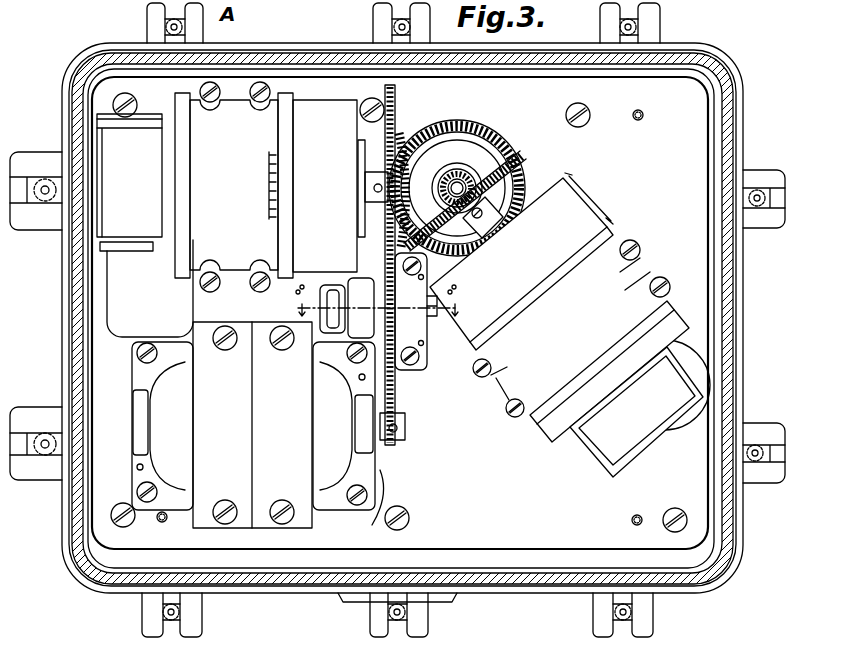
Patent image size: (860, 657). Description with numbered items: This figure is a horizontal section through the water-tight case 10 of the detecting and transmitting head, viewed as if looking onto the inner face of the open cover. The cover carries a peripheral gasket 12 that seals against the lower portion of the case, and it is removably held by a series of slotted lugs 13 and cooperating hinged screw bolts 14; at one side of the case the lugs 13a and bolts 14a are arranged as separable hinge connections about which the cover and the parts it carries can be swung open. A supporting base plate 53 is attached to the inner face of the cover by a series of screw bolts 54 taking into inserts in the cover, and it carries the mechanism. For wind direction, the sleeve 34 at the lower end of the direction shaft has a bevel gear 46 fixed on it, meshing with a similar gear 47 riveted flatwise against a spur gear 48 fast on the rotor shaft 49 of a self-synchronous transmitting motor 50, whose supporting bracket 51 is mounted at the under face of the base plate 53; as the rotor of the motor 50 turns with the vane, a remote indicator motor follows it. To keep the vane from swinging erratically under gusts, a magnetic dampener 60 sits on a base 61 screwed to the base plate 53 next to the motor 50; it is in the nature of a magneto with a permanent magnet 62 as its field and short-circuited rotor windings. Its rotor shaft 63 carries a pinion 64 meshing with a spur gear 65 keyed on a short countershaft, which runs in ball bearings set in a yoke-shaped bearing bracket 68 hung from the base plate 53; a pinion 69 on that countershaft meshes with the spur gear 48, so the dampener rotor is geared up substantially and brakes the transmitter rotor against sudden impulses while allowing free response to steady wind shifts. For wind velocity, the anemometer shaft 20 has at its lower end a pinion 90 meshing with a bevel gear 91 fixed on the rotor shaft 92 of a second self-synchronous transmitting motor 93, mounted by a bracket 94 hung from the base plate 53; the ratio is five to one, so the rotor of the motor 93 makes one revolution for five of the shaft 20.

The water-tight case 10 is at (723, 330).
The peripheral gasket 12 is at (733, 288).
The slotted lugs 13 is at (152, 22).
The lugs 13a is at (37, 157).
The hinged screw bolts 14 is at (202, 32).
The bolts 14a is at (44, 203).
The anemometer shaft 20 is at (467, 177).
The sleeve 34 is at (440, 170).
The bevel gear 46 is at (472, 128).
The bevel gear 47 is at (400, 133).
The spur gear 48 is at (395, 98).
The rotor shaft 49 is at (365, 188).
The transmitting motor 50 is at (310, 108).
The supporting bracket 51 is at (238, 105).
The supporting base plate 53 is at (540, 87).
The screw bolts 54 is at (133, 105).
The magnetic dampener 60 is at (385, 497).
The base 61 is at (335, 500).
The permanent magnet 62 is at (243, 512).
The rotor shaft 63 is at (367, 438).
The pinion 64 is at (383, 443).
The spur gear 65 is at (360, 378).
The bearing bracket 68 is at (418, 332).
The pinion 69 is at (388, 345).
The pinion 90 is at (443, 197).
The bevel gear 91 is at (513, 157).
The rotor shaft 92 is at (490, 230).
The transmitting motor 93 is at (577, 192).
The bracket 94 is at (642, 275).